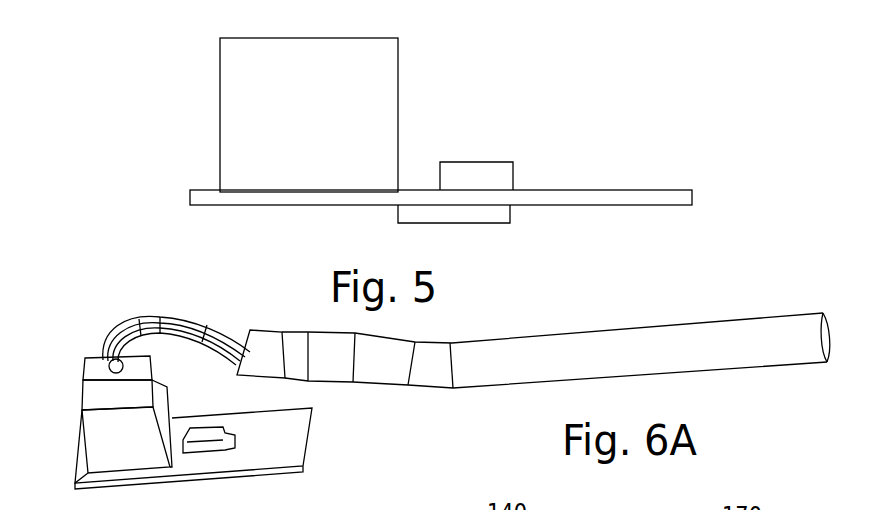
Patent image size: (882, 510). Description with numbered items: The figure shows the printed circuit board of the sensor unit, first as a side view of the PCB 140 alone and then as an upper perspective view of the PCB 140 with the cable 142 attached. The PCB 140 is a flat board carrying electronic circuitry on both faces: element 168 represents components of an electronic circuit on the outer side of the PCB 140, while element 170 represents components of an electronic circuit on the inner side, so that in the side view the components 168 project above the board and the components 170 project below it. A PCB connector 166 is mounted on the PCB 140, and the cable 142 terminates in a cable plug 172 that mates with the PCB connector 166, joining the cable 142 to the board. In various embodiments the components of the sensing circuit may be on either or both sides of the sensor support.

In FIG. 5, the PCB 140 is at (595, 190).
In FIG. 6A, the PCB 140 is at (302, 438).
In FIG. 6A, the cable 142 is at (718, 318).
In FIG. 5, the PCB connector 166 is at (398, 68).
In FIG. 6A, the PCB connector 166 is at (88, 437).
In FIG. 5, the components of an electronic circuit on the outer side 168 is at (497, 162).
In FIG. 6A, the components of an electronic circuit on the outer side 168 is at (208, 428).
In FIG. 5, the components of an electronic circuit on the inner side 170 is at (510, 210).
In FIG. 6A, the cable plug 172 is at (97, 360).